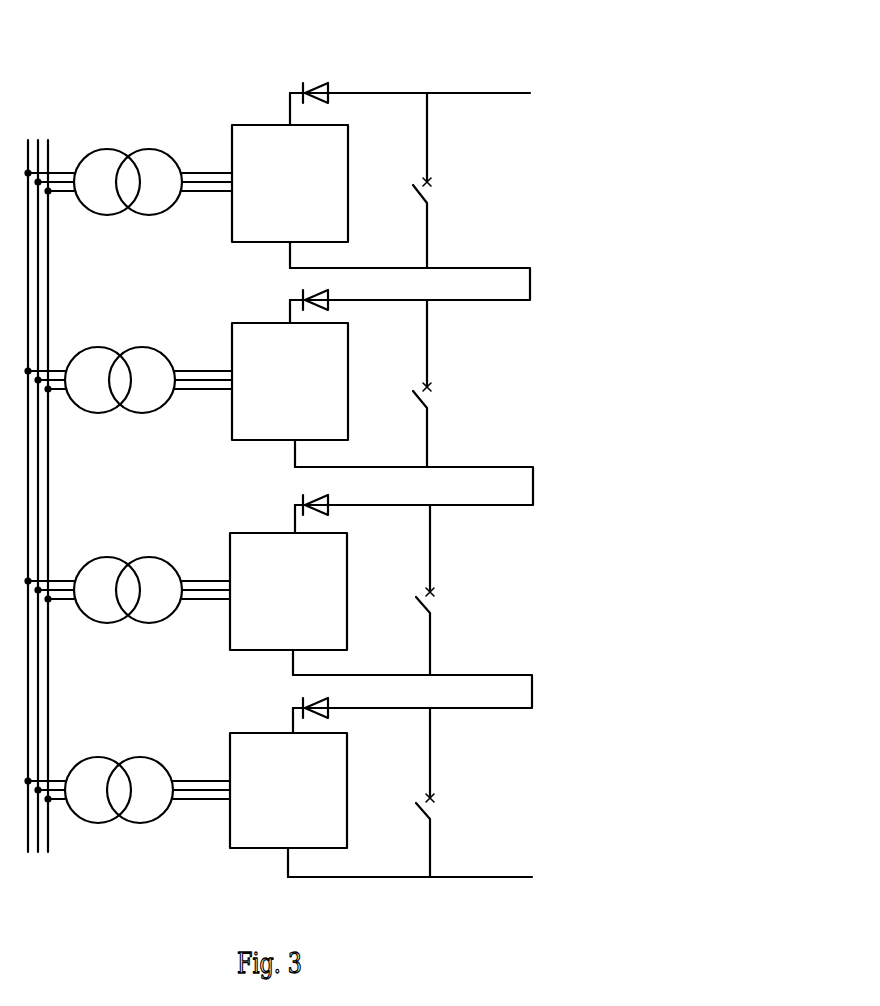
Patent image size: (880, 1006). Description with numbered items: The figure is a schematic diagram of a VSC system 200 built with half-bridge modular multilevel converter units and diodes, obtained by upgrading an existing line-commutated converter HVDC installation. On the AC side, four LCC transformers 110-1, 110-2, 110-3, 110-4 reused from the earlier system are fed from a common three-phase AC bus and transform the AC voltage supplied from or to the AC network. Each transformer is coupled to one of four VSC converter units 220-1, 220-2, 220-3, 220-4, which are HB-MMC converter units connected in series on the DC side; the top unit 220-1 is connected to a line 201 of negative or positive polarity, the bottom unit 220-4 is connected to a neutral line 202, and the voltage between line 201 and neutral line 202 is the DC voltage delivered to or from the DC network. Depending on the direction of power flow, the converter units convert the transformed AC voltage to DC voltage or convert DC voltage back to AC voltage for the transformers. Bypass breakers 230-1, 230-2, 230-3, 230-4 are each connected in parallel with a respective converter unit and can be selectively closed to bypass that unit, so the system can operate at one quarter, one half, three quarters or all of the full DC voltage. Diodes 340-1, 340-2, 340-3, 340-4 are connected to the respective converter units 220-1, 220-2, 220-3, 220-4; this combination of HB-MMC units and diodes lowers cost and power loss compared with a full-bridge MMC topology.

The VSC system 200 is at (147, 57).
The line 201 is at (473, 93).
The neutral line 202 is at (473, 877).
The LCC transformer 110-1 is at (128, 158).
The LCC transformer 110-2 is at (120, 355).
The LCC transformer 110-3 is at (128, 567).
The LCC transformer 110-4 is at (118, 767).
The VSC converter unit 220-1 is at (317, 125).
The VSC converter unit 220-2 is at (317, 323).
The VSC converter unit 220-3 is at (320, 533).
The VSC converter unit 220-4 is at (317, 733).
The bypass breaker 230-1 is at (445, 204).
The bypass breaker 230-2 is at (445, 411).
The bypass breaker 230-3 is at (448, 616).
The bypass breaker 230-4 is at (448, 822).
The diode 340-1 is at (303, 83).
The diode 340-2 is at (304, 290).
The diode 340-3 is at (304, 495).
The diode 340-4 is at (304, 698).